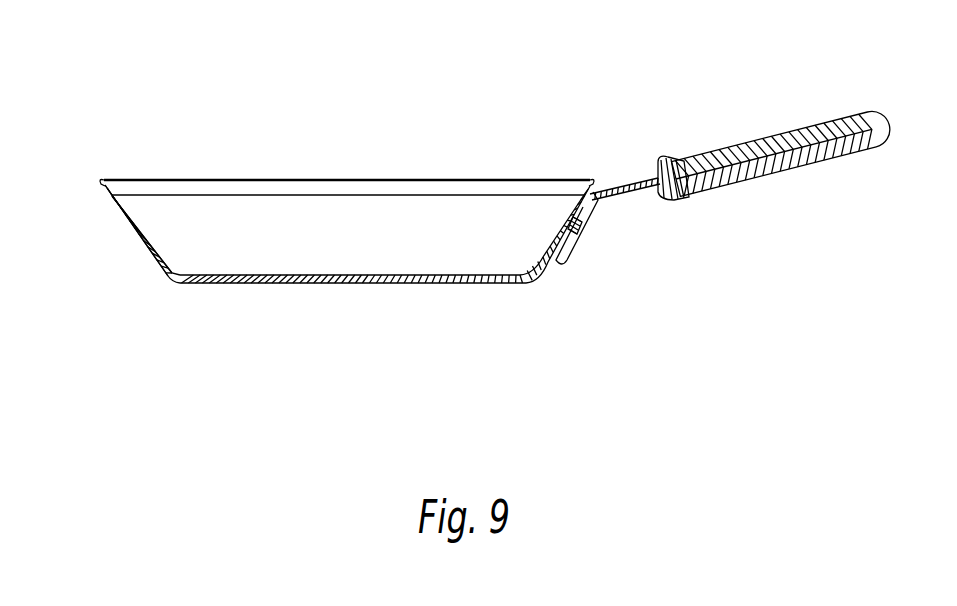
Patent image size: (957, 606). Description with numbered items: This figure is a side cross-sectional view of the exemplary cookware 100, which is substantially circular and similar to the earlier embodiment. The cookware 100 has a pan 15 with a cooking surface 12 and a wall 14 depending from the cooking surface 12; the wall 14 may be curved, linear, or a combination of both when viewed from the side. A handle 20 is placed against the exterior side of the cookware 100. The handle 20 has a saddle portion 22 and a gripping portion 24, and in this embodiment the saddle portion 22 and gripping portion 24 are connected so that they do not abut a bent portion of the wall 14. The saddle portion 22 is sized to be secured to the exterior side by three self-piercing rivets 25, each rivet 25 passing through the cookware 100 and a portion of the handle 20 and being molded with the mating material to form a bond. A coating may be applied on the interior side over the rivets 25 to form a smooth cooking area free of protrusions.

The cookware 100 is at (551, 95).
The cooking surface 12 is at (415, 320).
The wall 14 is at (268, 225).
The pan 15 is at (122, 222).
The handle 20 is at (874, 118).
The saddle portion 22 is at (569, 248).
The gripping portion 24 is at (812, 164).
The self-piercing rivet 25 is at (582, 236).